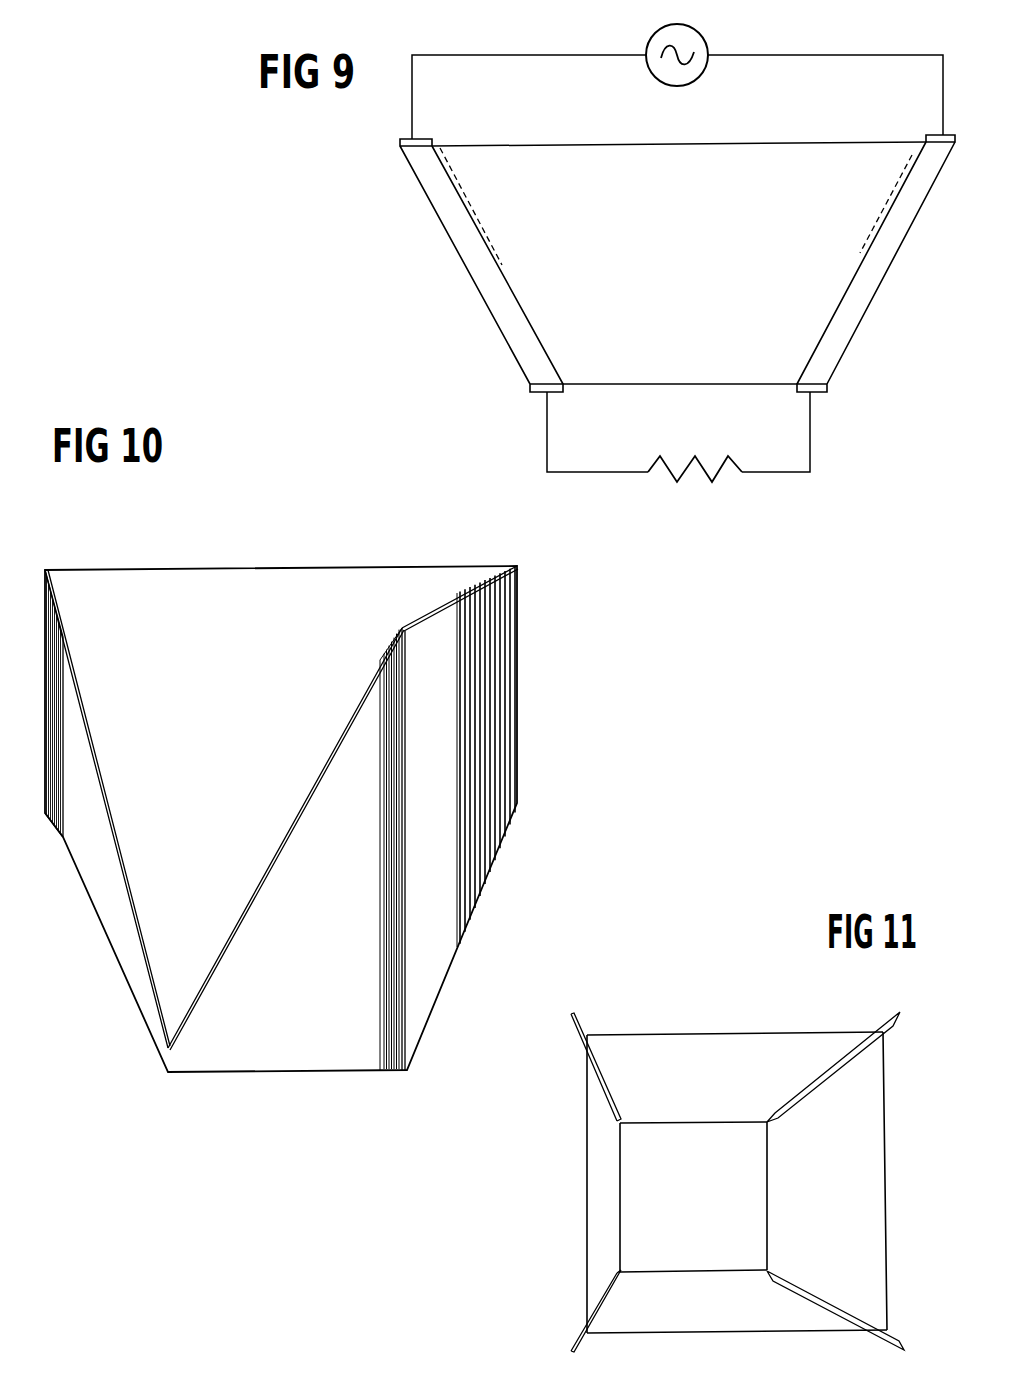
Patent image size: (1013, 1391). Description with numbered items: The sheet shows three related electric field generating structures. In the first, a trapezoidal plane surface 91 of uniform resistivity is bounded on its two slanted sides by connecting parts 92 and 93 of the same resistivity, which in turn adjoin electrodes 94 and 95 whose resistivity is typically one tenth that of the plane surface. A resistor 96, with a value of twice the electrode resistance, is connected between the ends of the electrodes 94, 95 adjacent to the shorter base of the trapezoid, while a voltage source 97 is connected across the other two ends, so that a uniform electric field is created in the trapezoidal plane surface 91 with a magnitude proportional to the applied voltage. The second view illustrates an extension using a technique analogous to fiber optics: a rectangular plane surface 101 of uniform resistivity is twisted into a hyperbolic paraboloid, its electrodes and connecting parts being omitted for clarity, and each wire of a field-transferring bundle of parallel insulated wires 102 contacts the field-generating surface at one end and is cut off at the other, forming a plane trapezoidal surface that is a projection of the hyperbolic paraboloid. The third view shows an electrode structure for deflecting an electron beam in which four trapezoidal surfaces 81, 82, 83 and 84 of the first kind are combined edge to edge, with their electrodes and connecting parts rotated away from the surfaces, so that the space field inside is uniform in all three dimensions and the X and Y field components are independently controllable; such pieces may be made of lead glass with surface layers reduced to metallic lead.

In FIG. 9, the trapezoidal plane surface 91 is at (685, 170).
In FIG. 9, the connecting part 92 is at (455, 170).
In FIG. 9, the connecting part 93 is at (905, 170).
In FIG. 9, the electrode 94 is at (483, 277).
In FIG. 9, the electrode 95 is at (852, 290).
In FIG. 9, the resistor 96 is at (700, 473).
In FIG. 9, the voltage source 97 is at (648, 72).
In FIG. 10, the rectangular plane surface 101 is at (210, 598).
In FIG. 10, the field-transferring bundle of parallel insulated wires 102 is at (492, 702).
In FIG. 11, the trapezoidal surface 81 is at (702, 1045).
In FIG. 11, the trapezoidal surface 82 is at (862, 1142).
In FIG. 11, the trapezoidal surface 83 is at (668, 1313).
In FIG. 11, the trapezoidal surface 84 is at (597, 1173).